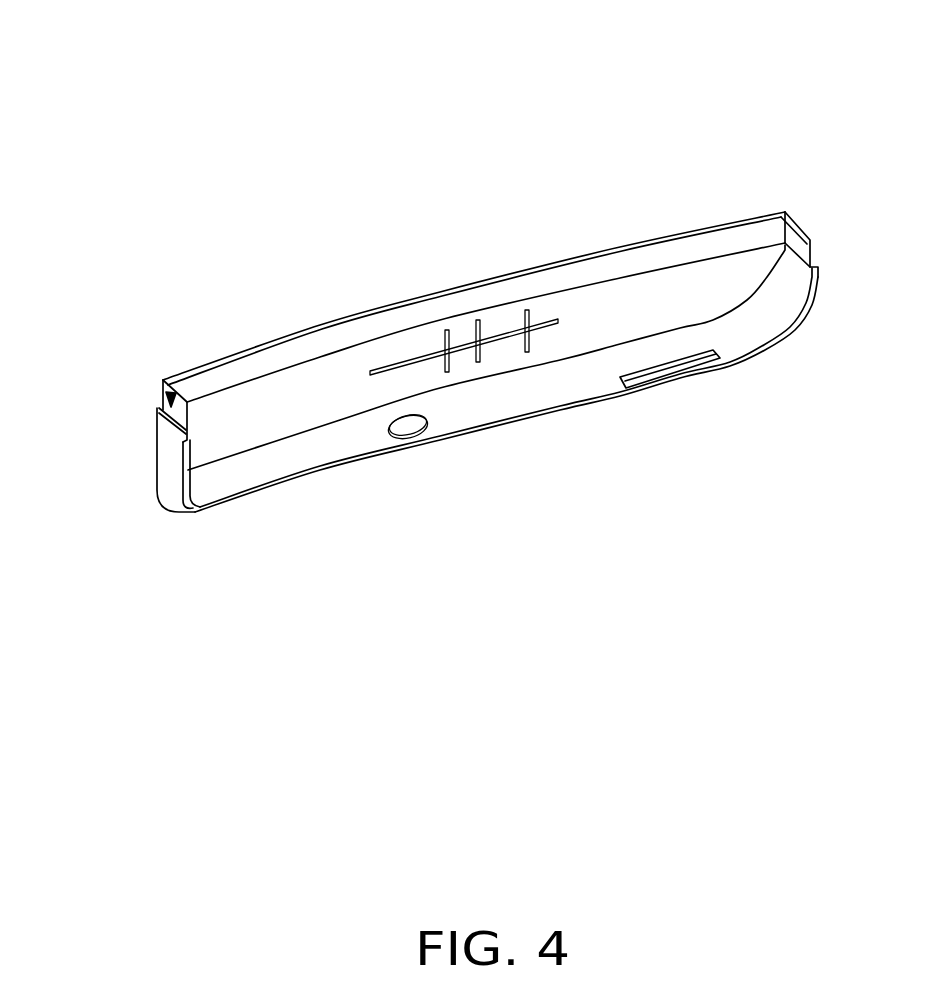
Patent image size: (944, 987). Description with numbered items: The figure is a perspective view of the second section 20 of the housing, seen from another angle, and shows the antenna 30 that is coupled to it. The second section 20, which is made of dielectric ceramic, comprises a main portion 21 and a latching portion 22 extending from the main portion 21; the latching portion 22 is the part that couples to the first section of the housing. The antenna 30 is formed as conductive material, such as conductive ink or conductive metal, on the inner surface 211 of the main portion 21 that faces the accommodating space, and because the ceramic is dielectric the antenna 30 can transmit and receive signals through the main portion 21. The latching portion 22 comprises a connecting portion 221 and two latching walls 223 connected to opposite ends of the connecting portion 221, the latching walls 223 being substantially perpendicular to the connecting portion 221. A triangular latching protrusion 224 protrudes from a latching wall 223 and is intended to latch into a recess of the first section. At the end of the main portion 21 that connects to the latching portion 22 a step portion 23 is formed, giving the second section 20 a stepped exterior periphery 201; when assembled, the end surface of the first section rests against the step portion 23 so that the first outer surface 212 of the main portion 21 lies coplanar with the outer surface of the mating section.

The second section 20 is at (441, 281).
The main portion 21 is at (285, 462).
The latching portion 22 is at (445, 286).
The connecting portion 221 is at (335, 343).
The latching walls 223 is at (181, 422).
The latching protrusion 224 is at (124, 387).
The step portion 23 is at (158, 406).
The stepped exterior periphery 201 is at (132, 460).
The first outer surface 212 is at (172, 465).
The inner surface 211 is at (486, 367).
The antenna 30 is at (482, 353).